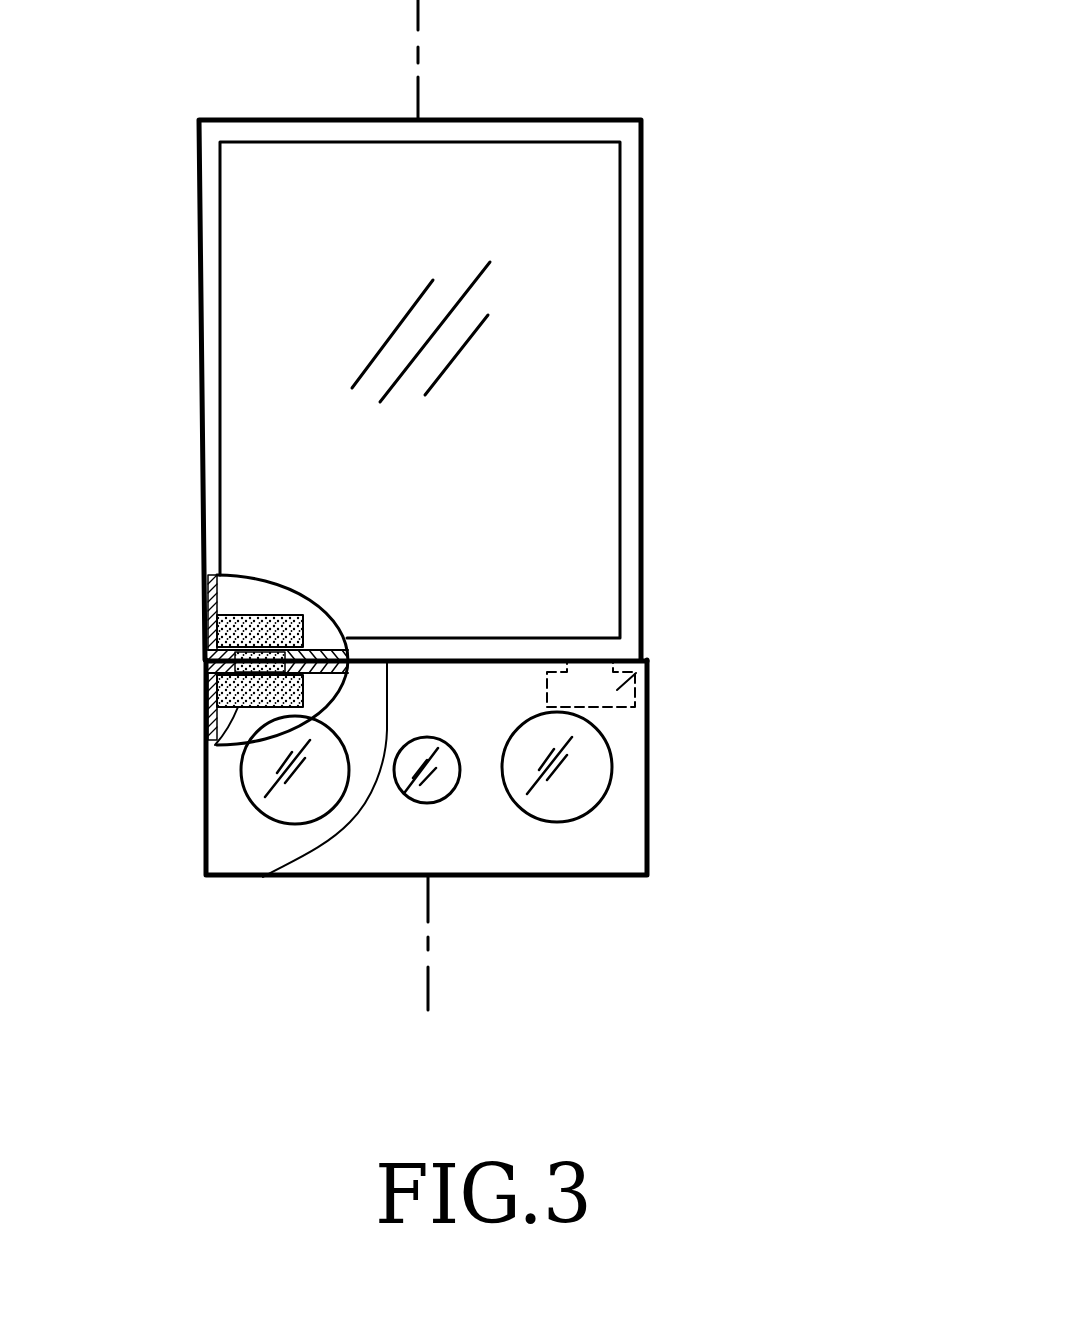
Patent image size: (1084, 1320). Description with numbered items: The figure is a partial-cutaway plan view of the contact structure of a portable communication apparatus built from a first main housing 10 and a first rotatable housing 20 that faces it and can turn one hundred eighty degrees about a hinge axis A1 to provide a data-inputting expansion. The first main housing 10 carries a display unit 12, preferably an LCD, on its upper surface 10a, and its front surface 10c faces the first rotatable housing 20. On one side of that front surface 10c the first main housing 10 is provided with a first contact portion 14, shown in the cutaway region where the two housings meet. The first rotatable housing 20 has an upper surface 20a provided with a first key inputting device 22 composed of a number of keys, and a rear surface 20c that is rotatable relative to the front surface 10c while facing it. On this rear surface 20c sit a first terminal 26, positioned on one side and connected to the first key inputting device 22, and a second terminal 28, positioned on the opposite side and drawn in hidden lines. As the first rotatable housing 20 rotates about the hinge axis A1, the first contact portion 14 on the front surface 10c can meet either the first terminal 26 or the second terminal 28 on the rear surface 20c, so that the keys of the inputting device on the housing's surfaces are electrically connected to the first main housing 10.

The first main housing 10 is at (550, 390).
The display unit 12 is at (568, 180).
The first contact portion 14 is at (257, 615).
The upper surface 10a is at (645, 612).
The front surface 10c is at (502, 660).
The first rotatable housing 20 is at (647, 762).
The upper surface 20a is at (650, 712).
The rear surface 20c is at (263, 877).
The first key inputting device 22 is at (565, 788).
The first terminal 26 is at (96, 545).
The second terminal 28 is at (653, 660).
The hinge axis A1 is at (428, 942).